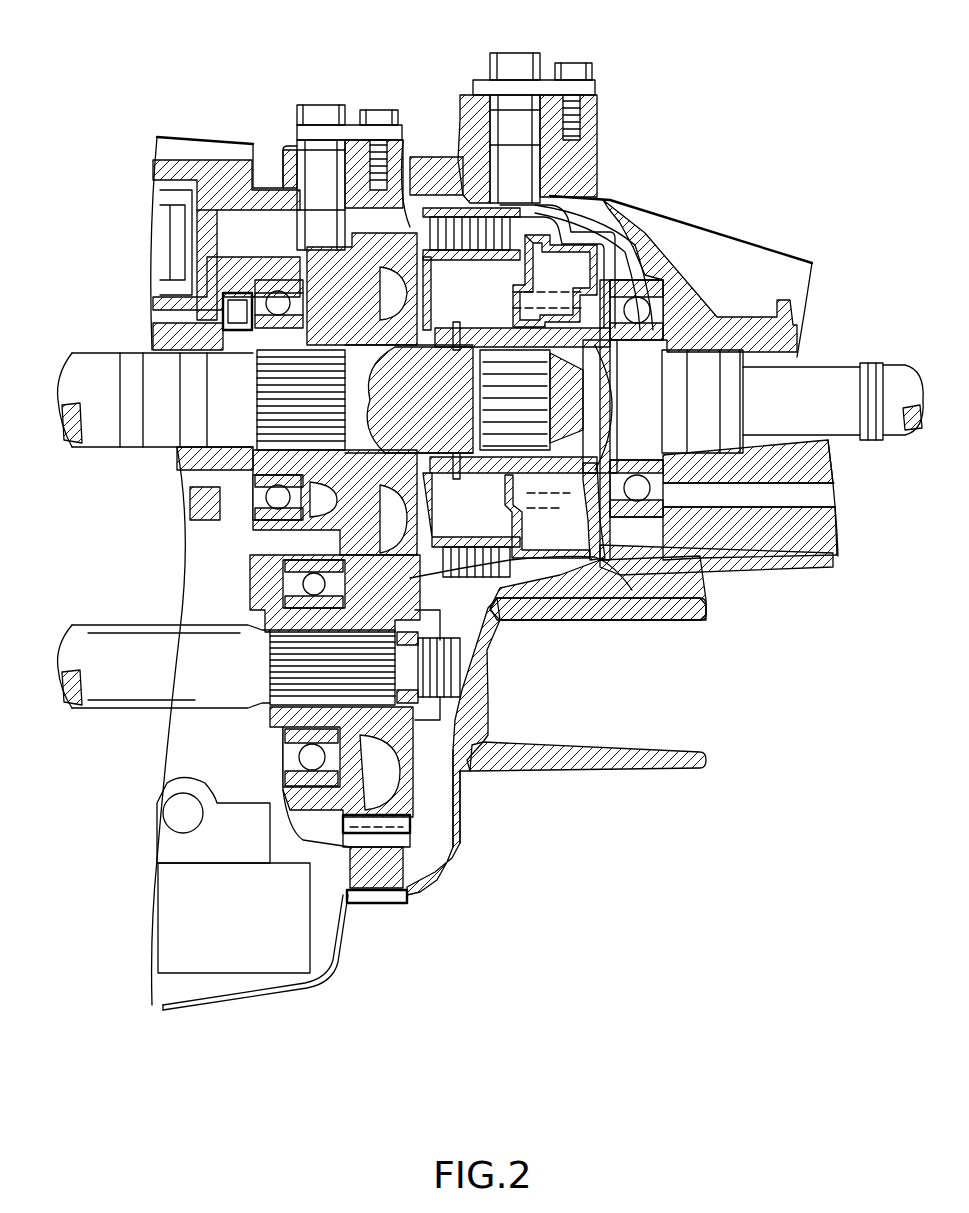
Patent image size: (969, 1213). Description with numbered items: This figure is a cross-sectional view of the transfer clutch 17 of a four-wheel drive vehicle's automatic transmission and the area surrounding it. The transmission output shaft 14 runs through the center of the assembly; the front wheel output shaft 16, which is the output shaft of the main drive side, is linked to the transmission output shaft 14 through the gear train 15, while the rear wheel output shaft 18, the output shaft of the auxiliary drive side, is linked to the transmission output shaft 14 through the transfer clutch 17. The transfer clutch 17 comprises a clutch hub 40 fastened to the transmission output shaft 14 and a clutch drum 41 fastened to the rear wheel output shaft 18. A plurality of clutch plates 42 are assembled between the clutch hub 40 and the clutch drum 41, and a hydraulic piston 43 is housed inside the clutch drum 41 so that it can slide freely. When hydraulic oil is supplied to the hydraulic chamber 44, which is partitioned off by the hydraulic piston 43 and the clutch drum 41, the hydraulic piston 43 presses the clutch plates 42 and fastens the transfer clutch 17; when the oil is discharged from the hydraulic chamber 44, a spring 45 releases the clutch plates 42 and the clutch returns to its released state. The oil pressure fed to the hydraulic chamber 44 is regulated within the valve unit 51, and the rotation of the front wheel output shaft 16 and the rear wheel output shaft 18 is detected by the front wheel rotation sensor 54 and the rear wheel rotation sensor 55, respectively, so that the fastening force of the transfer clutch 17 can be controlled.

The transmission output shaft 14 is at (100, 430).
The gear train 15 is at (428, 813).
The front wheel output shaft 16 is at (123, 688).
The transfer clutch 17 is at (580, 205).
The rear wheel output shaft 18 is at (842, 377).
The clutch hub 40 is at (432, 288).
The clutch drum 41 is at (577, 235).
The clutch plates 42 is at (410, 228).
The hydraulic piston 43 is at (558, 248).
The hydraulic chamber 44 is at (623, 317).
The spring 45 is at (562, 500).
The valve unit 51 is at (292, 965).
The front wheel rotation sensor 54 is at (320, 153).
The rear wheel rotation sensor 55 is at (520, 127).